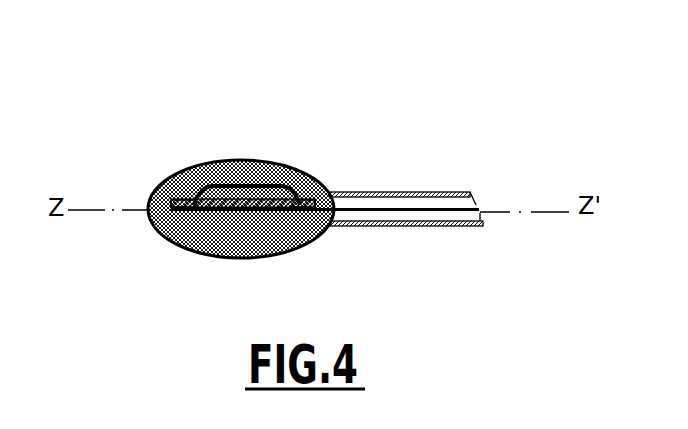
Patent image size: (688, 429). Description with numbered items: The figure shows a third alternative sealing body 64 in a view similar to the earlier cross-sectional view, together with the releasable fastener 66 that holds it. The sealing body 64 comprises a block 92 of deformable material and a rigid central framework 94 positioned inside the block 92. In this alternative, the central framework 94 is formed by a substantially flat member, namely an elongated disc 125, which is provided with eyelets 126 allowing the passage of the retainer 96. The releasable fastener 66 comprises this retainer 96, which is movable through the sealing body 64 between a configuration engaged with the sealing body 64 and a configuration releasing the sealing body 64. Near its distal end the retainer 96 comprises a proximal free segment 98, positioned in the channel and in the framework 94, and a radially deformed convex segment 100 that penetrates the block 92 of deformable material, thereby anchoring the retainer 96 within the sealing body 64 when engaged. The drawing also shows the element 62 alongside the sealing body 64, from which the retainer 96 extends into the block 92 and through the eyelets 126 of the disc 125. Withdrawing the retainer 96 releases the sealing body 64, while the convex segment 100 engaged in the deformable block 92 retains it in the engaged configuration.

The tube 62 is at (422, 226).
The sealing body 64 is at (152, 170).
The releasable fastener 66 is at (221, 146).
The block 92 is at (312, 214).
The central framework 94 is at (238, 216).
The retainer 96 is at (416, 203).
The proximal free segment 98 is at (358, 214).
The radially deformed convex segment 100 is at (222, 184).
The elongated disc 125 is at (258, 222).
The eyelets 126 is at (186, 210).